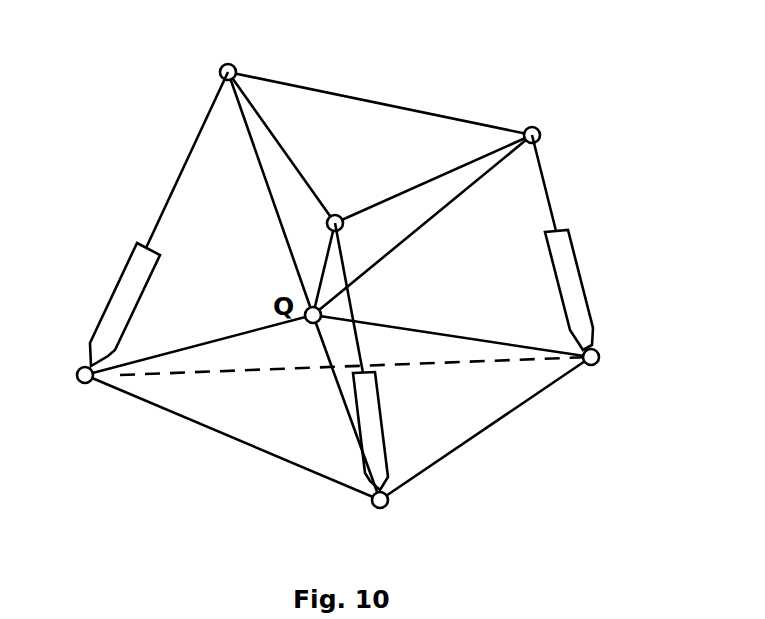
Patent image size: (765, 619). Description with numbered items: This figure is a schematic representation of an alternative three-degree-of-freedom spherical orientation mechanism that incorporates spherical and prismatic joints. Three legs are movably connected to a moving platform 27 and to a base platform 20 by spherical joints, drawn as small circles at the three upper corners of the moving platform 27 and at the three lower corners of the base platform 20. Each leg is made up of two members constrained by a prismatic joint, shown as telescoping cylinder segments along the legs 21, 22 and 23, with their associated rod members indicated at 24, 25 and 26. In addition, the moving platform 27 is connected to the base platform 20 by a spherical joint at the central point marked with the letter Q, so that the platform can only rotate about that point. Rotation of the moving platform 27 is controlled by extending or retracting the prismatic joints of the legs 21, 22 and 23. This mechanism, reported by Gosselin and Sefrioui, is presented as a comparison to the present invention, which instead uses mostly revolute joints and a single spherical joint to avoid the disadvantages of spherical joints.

The base platform 20 is at (453, 445).
The first prismatic actuator leg 21 is at (113, 283).
The second prismatic actuator leg 22 is at (385, 455).
The third prismatic actuator leg 23 is at (588, 300).
The first leg rod 24 is at (193, 148).
The second leg rod 25 is at (353, 305).
The third leg rod 26 is at (550, 183).
The moving platform 27 is at (350, 120).